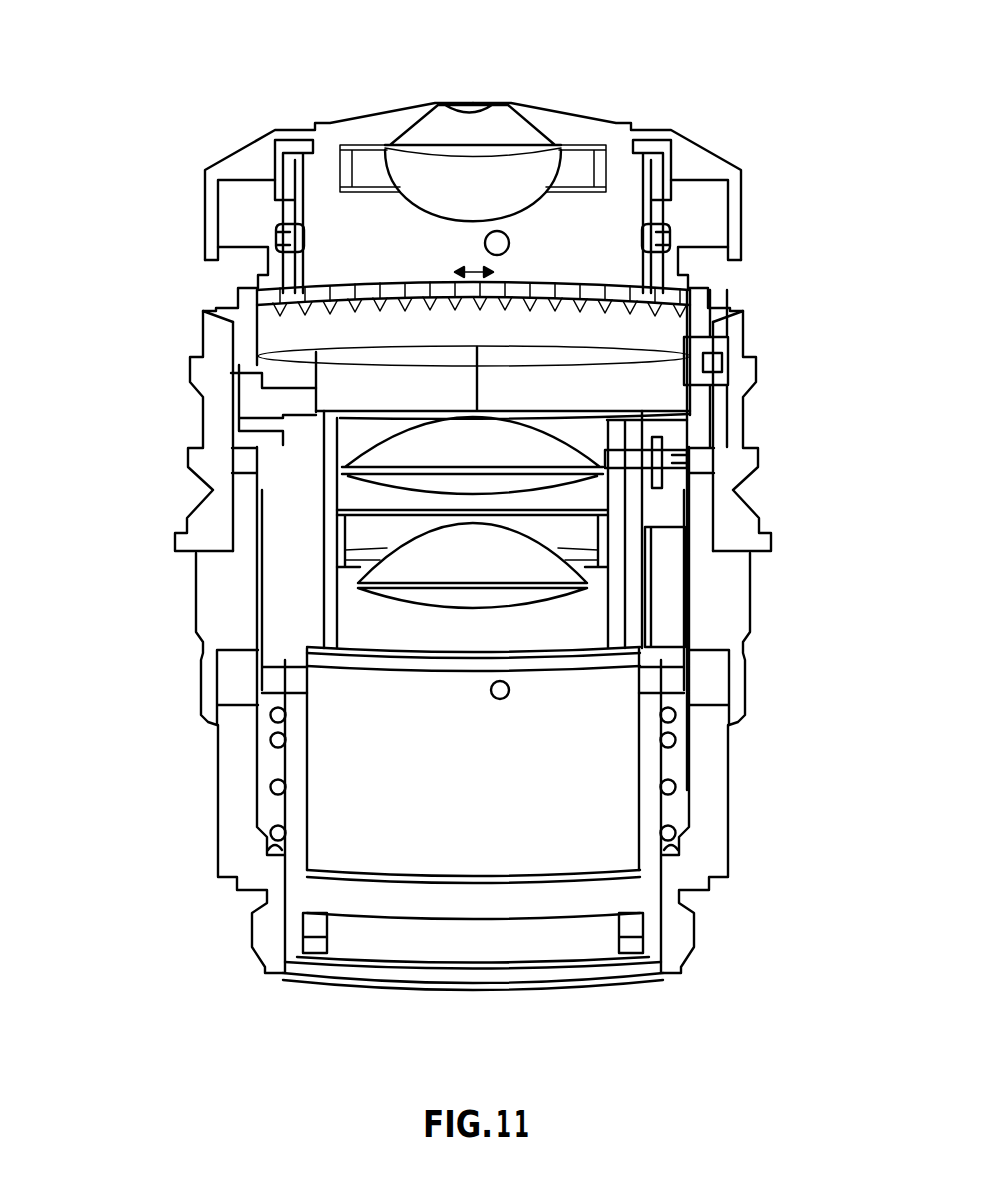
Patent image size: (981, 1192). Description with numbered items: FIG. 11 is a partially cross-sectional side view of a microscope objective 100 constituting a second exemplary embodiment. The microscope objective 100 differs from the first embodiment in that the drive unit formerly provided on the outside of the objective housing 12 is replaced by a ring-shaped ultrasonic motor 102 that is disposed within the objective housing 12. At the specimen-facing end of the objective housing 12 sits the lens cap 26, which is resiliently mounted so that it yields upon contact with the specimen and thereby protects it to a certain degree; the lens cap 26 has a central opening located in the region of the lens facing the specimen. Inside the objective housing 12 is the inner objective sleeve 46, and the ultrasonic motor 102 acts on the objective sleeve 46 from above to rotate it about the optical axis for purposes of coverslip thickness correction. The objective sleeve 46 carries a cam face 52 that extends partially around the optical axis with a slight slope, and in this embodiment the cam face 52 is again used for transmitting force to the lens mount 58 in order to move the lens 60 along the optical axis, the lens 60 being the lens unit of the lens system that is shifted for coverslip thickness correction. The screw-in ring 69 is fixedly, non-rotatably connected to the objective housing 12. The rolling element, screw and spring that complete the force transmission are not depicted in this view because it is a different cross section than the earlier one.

The microscope objective 100 is at (163, 69).
The ring-shaped ultrasonic motor 102 is at (372, 297).
The lens cap 26 is at (712, 170).
The objective sleeve 46 is at (517, 363).
The cam face 52 is at (650, 436).
The screw-in ring 69 is at (748, 610).
The lens mount 58 is at (611, 552).
The lens 60 is at (505, 573).
The objective housing 12 is at (730, 830).